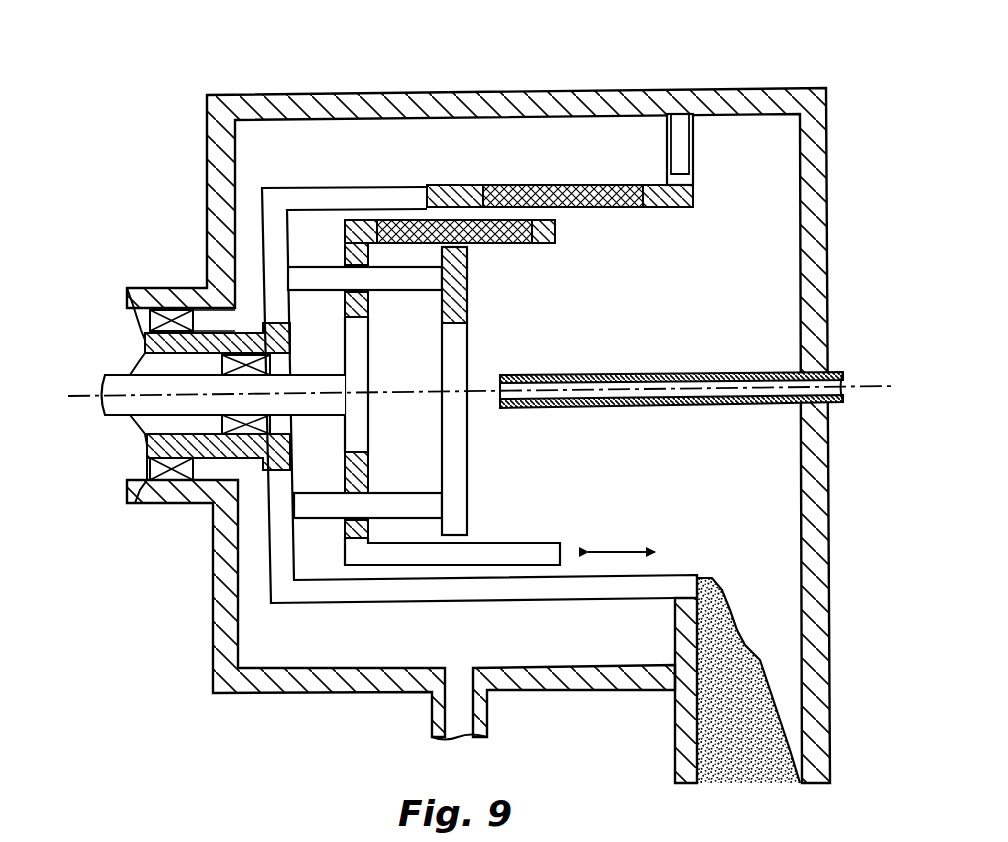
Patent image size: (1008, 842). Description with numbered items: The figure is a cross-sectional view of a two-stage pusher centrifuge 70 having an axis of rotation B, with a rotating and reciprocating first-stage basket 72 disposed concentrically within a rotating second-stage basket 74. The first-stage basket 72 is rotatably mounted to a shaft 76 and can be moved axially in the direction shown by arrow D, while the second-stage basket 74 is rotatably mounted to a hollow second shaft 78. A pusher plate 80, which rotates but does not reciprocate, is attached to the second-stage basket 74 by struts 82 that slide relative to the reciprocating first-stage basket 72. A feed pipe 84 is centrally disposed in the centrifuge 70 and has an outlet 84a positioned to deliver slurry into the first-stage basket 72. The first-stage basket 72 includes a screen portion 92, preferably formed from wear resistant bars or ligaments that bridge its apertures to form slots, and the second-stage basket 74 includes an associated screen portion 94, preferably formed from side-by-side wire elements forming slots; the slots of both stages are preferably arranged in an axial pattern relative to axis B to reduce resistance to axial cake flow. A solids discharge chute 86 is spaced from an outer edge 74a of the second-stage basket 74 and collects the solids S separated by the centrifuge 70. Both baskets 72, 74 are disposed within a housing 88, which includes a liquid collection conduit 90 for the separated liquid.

The two-stage pusher centrifuge 70 is at (628, 76).
The first-stage basket 72 is at (382, 567).
The second-stage basket 74 is at (465, 601).
The outer edge 74a is at (698, 577).
The shaft 76 is at (130, 373).
The second shaft 78 is at (156, 318).
The pusher plate 80 is at (482, 192).
The struts 82 is at (392, 270).
The feed pipe 84 is at (553, 373).
The outlet 84a is at (497, 400).
The solids discharge chute 86 is at (700, 745).
The housing 88 is at (213, 681).
The liquid collection conduit 90 is at (488, 710).
The screen portion 92 is at (407, 218).
The screen portion 94 is at (615, 208).
The solids S is at (700, 700).
The arrow D is at (637, 557).
The axis of rotation B is at (476, 391).